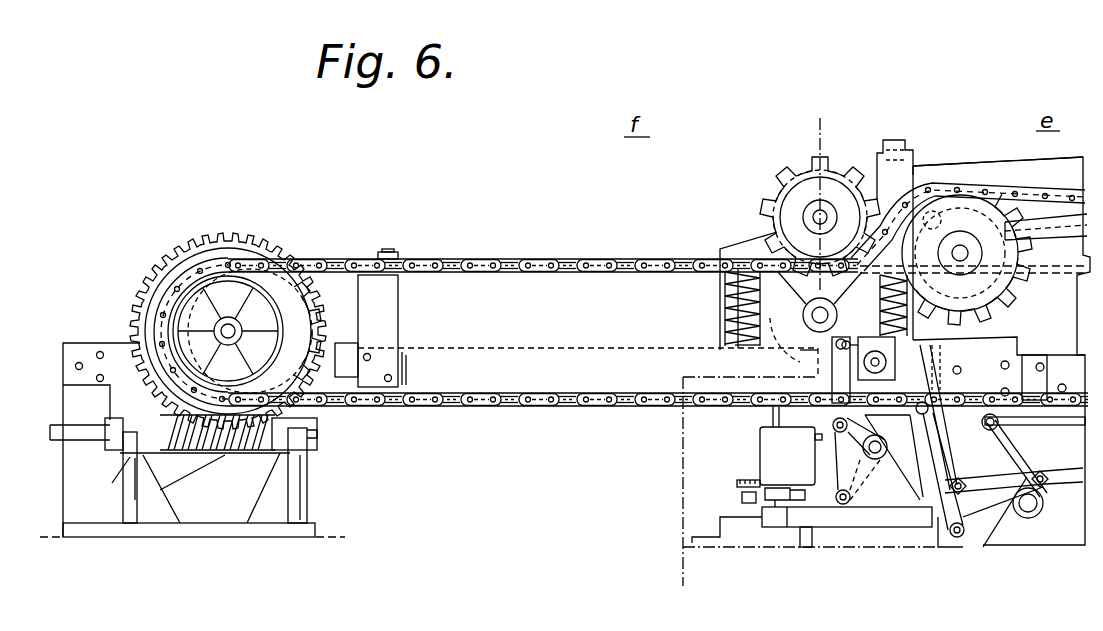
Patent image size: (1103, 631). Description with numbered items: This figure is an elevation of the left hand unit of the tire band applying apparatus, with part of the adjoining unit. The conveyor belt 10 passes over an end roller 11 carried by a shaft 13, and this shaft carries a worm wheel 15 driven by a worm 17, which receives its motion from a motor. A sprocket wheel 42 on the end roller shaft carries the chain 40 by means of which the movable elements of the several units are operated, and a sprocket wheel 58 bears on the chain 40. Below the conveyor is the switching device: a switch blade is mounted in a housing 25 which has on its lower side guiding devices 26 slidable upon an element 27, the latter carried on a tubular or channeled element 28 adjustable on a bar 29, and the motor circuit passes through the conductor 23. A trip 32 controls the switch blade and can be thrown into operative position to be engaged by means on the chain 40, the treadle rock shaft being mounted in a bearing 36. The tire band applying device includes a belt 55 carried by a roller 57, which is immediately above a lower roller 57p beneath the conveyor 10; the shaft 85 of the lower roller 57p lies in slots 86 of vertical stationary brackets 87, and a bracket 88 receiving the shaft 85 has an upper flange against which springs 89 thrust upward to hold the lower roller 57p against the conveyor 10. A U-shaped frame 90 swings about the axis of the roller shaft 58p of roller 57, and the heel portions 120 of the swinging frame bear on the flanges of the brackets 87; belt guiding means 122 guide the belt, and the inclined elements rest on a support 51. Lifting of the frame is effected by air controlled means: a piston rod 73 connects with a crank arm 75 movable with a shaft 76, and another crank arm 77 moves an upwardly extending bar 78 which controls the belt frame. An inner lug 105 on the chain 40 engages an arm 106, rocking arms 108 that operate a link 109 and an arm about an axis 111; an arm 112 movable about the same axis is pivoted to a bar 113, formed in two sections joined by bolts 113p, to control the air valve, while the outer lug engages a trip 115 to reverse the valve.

The conveyor belt 10 is at (1040, 285).
The end roller 11 is at (845, 128).
The shaft 13 is at (235, 324).
The worm wheel 15 is at (190, 252).
The worm 17 is at (222, 462).
The conductor 23 is at (748, 479).
The housing 25 is at (760, 446).
The guiding devices 26 is at (741, 496).
The element 27 is at (782, 525).
The tubular or channeled element 28 is at (860, 527).
The bar 29 is at (708, 532).
The trip 32 is at (770, 419).
The bearing 36 is at (817, 549).
The chain 40 is at (545, 258).
The sprocket wheel 42 is at (322, 300).
The support 51 is at (1040, 314).
The band or belt 55 is at (1070, 158).
The roller 57 is at (876, 165).
The roller 57p is at (740, 357).
The sprocket wheel 58 is at (803, 172).
The shaft 58p is at (817, 209).
The piston rod 73 is at (1055, 426).
The crank arm 75 is at (972, 436).
The shaft 76 is at (1040, 512).
The crank arm 77 is at (972, 548).
The upwardly extending bar 78 is at (945, 355).
The shaft 85 is at (816, 317).
The slot 86 is at (803, 354).
The vertical stationary bracket 87 is at (724, 300).
The bracket 88 is at (882, 305).
The spring 89 is at (730, 338).
The U-shaped frame 90 is at (913, 152).
The inner lug 105 is at (948, 397).
The arm 106 is at (882, 388).
The arm 108 is at (836, 319).
The link 109 is at (840, 386).
The axis 111 is at (873, 465).
The arm 112 is at (834, 468).
The bar 113 is at (982, 478).
The bolts 113p is at (1052, 470).
The trip 115 is at (912, 425).
The heel portion 120 is at (770, 200).
The belt guiding means 122 is at (396, 256).